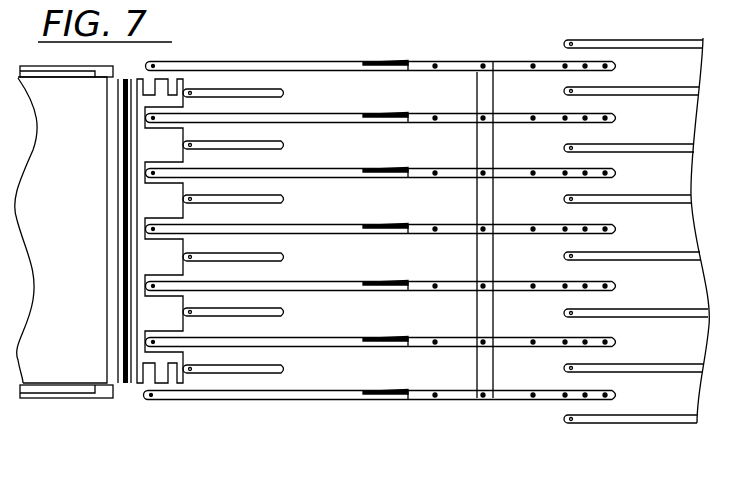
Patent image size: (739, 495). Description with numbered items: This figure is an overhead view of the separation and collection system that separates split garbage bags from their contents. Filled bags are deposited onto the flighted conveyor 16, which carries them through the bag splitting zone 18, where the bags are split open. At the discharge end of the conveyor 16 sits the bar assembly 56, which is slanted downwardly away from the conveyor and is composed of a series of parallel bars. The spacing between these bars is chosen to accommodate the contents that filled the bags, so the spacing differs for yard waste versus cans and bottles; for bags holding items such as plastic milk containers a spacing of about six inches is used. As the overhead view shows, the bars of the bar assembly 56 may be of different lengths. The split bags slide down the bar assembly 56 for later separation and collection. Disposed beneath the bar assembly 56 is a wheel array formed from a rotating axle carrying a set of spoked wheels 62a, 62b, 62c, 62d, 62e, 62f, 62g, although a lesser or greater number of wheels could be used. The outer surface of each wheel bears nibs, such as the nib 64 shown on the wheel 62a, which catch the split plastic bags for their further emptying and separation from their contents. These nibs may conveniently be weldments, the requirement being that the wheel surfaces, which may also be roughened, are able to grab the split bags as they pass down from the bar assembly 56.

The conveyor 16 is at (80, 213).
The bag splitting zone 18 is at (497, 59).
The bar assembly 56 is at (293, 63).
The spoked wheel 62a is at (494, 400).
The spoked wheel 62b is at (511, 345).
The spoked wheel 62c is at (511, 289).
The spoked wheel 62d is at (511, 232).
The spoked wheel 62e is at (511, 176).
The spoked wheel 62f is at (511, 121).
The spoked wheel 62g is at (511, 69).
The nib 64 is at (437, 401).